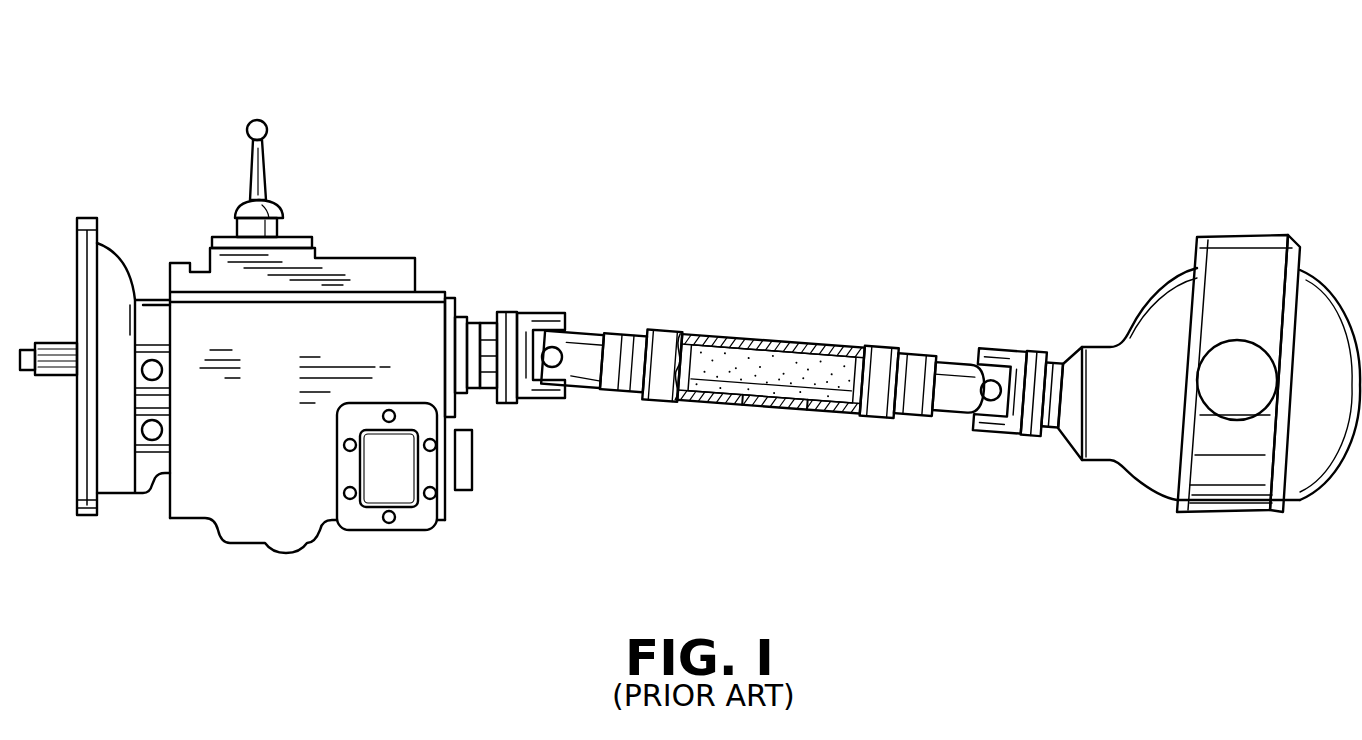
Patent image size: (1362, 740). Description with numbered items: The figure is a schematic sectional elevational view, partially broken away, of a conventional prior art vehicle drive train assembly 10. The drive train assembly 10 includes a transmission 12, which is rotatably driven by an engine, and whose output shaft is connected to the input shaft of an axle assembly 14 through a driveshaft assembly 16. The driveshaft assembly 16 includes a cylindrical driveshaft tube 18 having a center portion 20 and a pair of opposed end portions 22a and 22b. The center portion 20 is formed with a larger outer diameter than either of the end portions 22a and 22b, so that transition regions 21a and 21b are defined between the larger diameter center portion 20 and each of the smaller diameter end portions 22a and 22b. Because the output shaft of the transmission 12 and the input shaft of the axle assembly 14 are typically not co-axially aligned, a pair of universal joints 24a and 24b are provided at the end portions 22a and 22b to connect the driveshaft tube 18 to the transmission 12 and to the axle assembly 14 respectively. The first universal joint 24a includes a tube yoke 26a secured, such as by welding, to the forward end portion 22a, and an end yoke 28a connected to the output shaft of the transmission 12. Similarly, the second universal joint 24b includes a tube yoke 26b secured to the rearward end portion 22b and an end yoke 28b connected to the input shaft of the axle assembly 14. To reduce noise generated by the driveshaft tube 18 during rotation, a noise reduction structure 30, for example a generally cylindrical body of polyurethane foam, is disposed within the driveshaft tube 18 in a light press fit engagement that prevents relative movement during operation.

The vehicle drive train assembly 10 is at (340, 116).
The transmission 12 is at (228, 515).
The axle assembly 14 is at (1242, 500).
The driveshaft assembly 16 is at (1055, 222).
The driveshaft tube 18 is at (718, 330).
The center portion 20 is at (737, 410).
The transition region 21a is at (633, 397).
The transition region 21b is at (917, 353).
The forward end portion 22a is at (617, 333).
The rearward end portion 22b is at (930, 360).
The first universal joint 24a is at (540, 312).
The second universal joint 24b is at (1005, 445).
The tube yoke 26a is at (582, 337).
The tube yoke 26b is at (957, 405).
The end yoke 28a is at (537, 400).
The end yoke 28b is at (1003, 355).
The noise reduction structure 30 is at (790, 393).